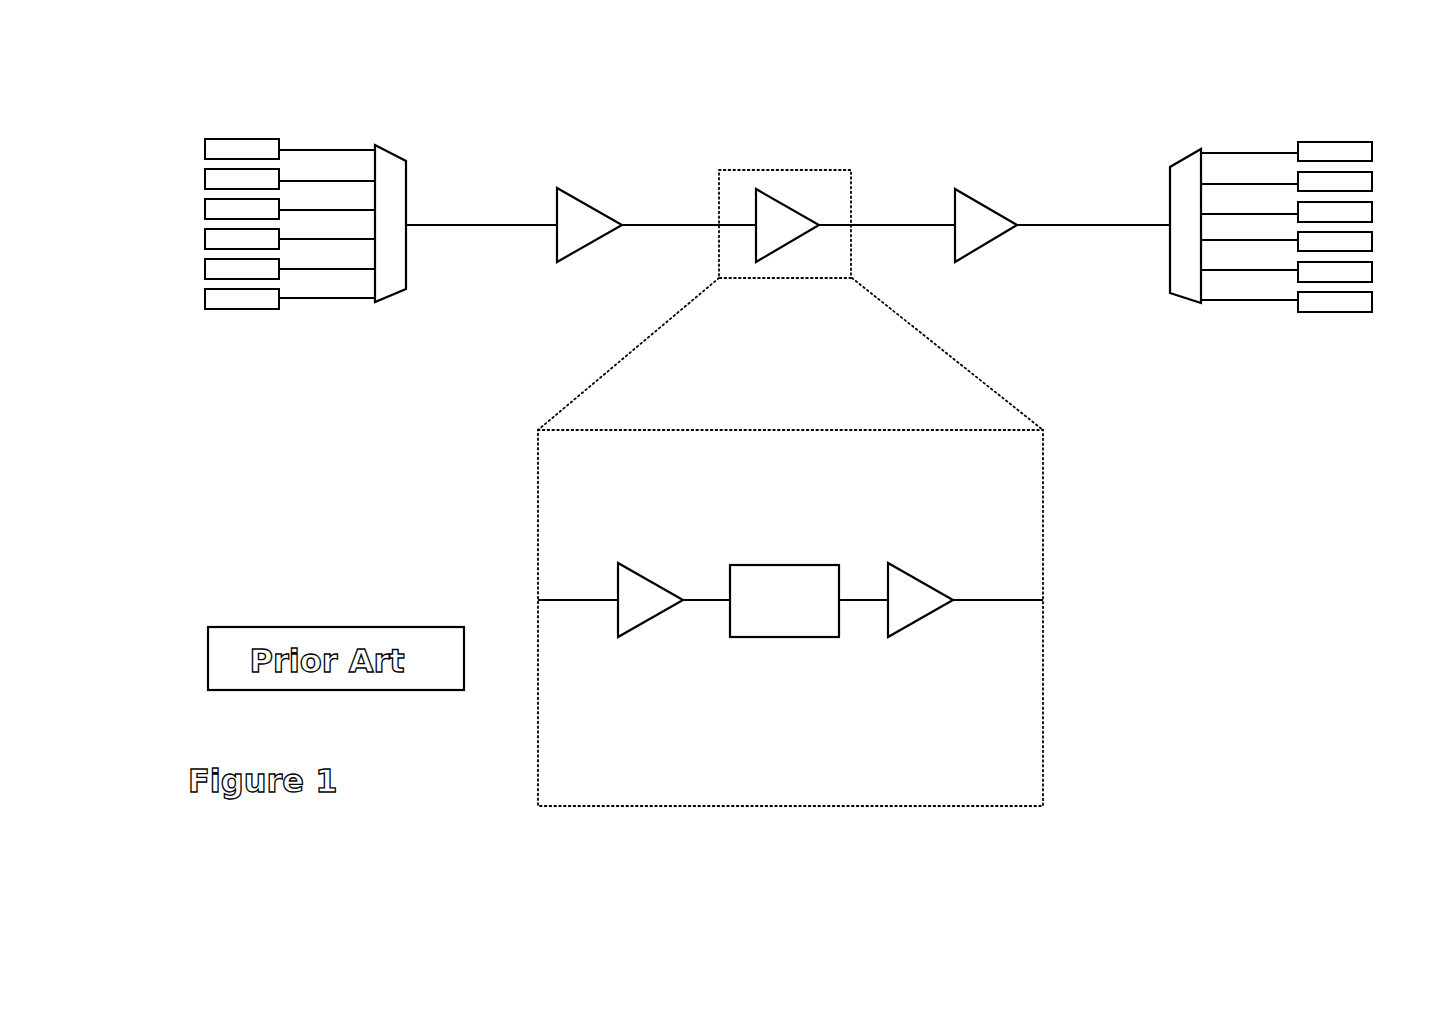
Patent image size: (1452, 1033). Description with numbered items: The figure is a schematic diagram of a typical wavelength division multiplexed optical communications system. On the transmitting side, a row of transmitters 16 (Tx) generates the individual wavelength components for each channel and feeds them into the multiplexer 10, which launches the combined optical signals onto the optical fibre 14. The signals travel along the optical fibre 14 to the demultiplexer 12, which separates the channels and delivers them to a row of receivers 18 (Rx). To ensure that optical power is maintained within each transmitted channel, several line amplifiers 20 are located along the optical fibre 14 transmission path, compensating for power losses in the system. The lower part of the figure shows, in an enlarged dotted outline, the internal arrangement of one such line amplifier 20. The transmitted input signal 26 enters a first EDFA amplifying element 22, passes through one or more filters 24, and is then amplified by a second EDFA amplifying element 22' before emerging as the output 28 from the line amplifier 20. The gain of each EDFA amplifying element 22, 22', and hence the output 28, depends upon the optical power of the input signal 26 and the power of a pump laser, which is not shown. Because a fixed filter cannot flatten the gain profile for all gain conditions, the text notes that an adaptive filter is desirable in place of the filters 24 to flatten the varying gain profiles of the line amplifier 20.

The multiplexer 10 is at (391, 302).
The demultiplexer 12 is at (1169, 299).
The optical fibre 14 is at (788, 201).
The transmitters 16 is at (256, 223).
The receivers 18 is at (1323, 225).
The line amplifier 20 is at (836, 494).
The EDFA amplifying element 22 is at (653, 623).
The EDFA amplifying element 22' is at (943, 615).
The filters 24 is at (778, 643).
The input signal 26 is at (578, 616).
The output 28 is at (998, 583).